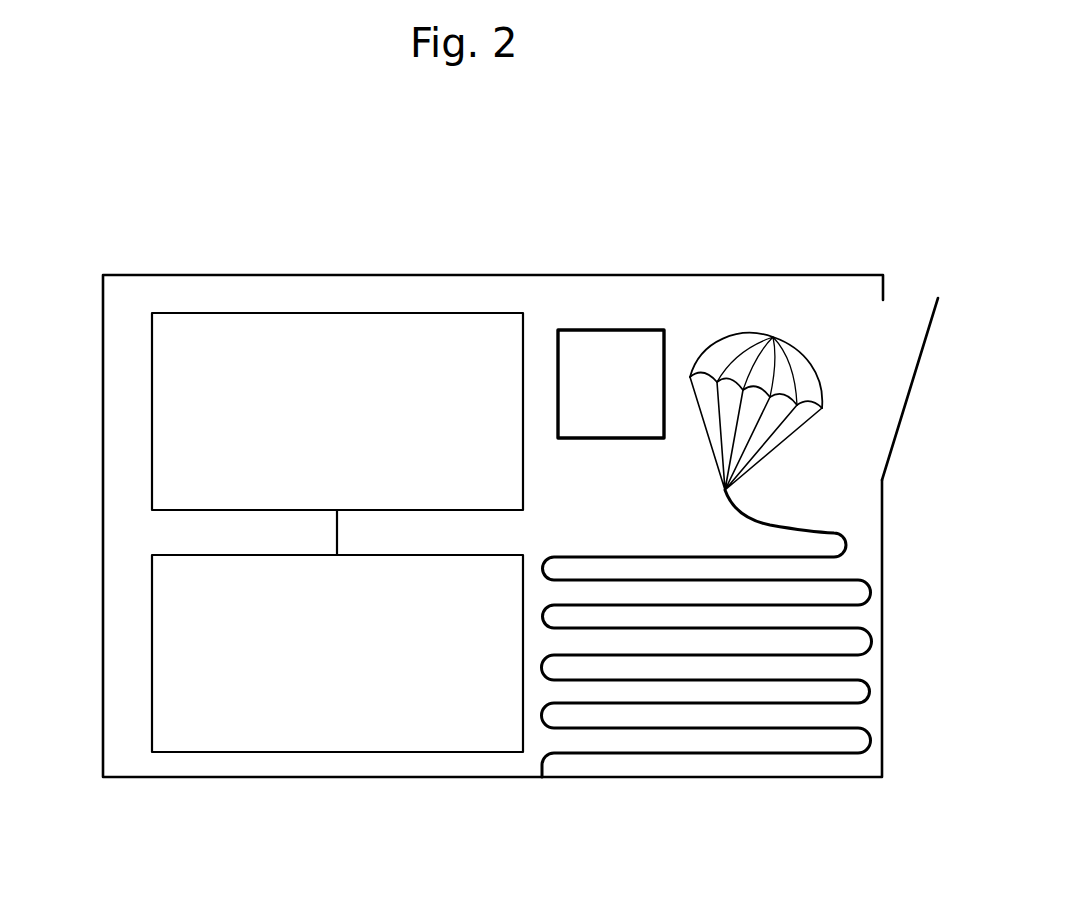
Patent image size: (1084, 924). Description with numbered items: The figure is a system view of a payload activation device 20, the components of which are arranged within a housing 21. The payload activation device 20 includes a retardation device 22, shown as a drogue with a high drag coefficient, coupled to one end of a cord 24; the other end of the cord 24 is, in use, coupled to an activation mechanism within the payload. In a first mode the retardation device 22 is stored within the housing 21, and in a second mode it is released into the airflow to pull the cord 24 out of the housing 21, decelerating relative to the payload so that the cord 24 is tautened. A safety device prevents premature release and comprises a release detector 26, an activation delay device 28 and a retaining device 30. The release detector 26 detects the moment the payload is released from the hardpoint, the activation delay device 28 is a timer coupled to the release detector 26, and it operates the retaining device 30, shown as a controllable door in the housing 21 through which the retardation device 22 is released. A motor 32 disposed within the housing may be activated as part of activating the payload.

The payload activation device 20 is at (498, 510).
The housing 21 is at (797, 777).
The retardation device 22 is at (747, 353).
The cord 24 is at (617, 728).
The release detector 26 is at (400, 358).
The activation delay device 28 is at (432, 705).
The retaining device 30 is at (905, 413).
The motor 32 is at (626, 348).